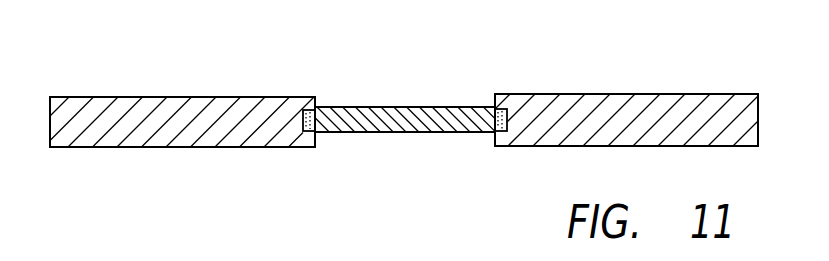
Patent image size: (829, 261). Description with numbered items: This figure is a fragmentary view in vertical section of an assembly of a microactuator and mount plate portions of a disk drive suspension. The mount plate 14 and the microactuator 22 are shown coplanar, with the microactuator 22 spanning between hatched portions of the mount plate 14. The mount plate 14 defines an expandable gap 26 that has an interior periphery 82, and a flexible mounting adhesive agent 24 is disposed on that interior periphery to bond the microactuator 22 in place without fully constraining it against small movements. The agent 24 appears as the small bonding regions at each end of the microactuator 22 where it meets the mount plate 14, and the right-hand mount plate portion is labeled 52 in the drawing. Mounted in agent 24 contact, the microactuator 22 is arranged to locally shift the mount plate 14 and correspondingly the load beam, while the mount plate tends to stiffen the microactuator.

The mount plate 14 is at (112, 85).
The microactuator 22 is at (413, 100).
The adhesive or bonding agent 24 is at (308, 110).
The expandable gap 26 is at (330, 135).
The second substrate 52 is at (474, 100).
The interior periphery 82 is at (493, 139).